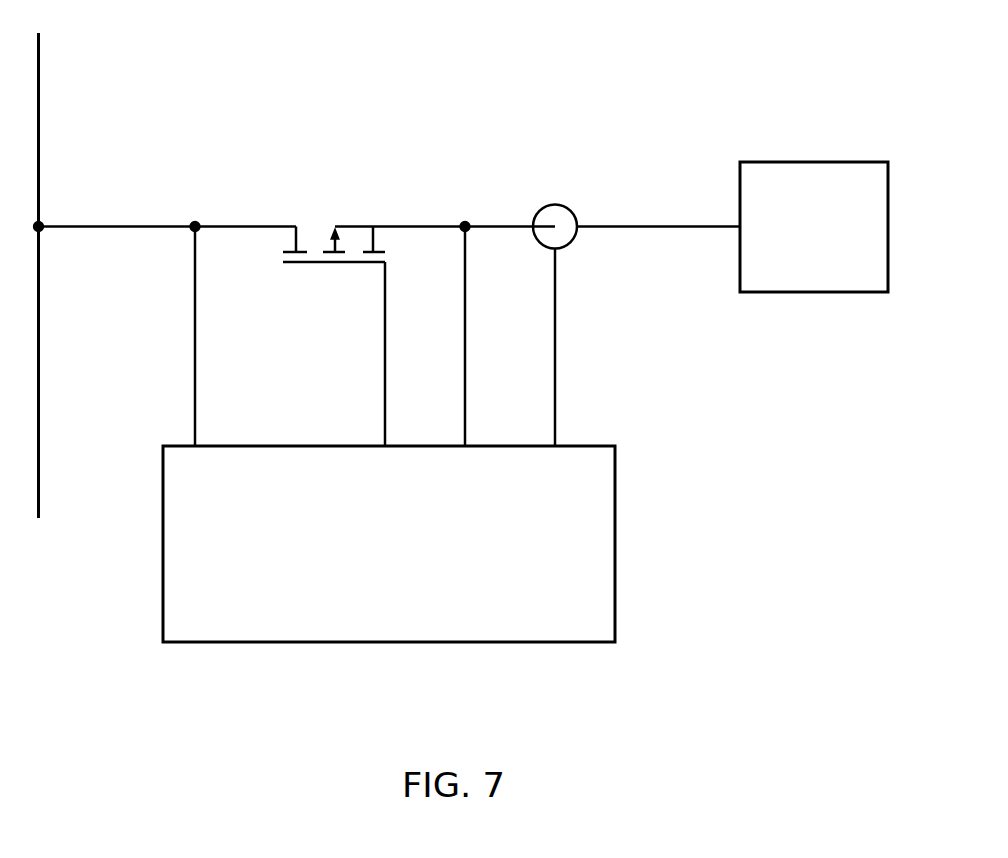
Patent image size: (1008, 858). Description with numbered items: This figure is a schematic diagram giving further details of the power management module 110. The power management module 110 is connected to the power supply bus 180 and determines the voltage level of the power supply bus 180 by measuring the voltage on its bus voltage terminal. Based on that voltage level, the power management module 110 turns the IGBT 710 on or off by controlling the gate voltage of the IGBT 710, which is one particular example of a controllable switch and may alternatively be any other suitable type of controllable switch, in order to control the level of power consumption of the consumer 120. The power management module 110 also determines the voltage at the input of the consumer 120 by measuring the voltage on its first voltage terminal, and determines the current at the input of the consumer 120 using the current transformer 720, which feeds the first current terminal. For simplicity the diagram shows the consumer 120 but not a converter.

The power supply bus 180 is at (72, 38).
The IGBT 710 is at (343, 204).
The current transformer 720 is at (562, 188).
The consumer 120 is at (820, 146).
The power management module 110 is at (552, 660).